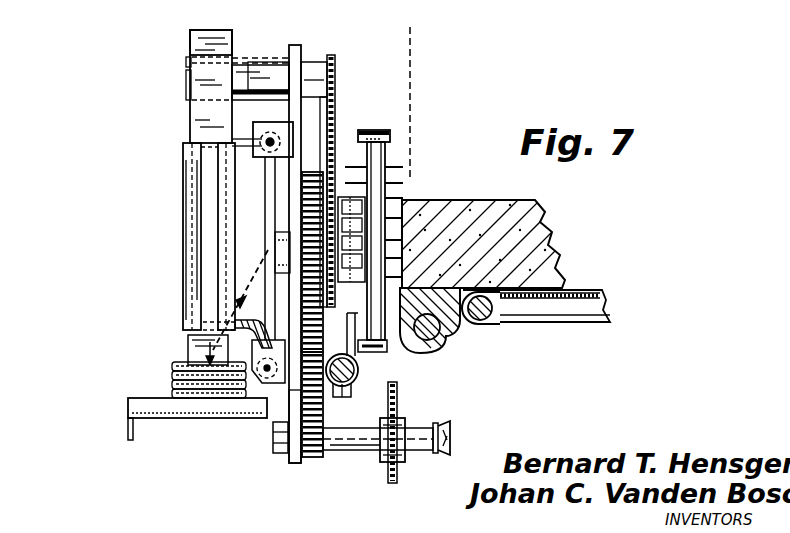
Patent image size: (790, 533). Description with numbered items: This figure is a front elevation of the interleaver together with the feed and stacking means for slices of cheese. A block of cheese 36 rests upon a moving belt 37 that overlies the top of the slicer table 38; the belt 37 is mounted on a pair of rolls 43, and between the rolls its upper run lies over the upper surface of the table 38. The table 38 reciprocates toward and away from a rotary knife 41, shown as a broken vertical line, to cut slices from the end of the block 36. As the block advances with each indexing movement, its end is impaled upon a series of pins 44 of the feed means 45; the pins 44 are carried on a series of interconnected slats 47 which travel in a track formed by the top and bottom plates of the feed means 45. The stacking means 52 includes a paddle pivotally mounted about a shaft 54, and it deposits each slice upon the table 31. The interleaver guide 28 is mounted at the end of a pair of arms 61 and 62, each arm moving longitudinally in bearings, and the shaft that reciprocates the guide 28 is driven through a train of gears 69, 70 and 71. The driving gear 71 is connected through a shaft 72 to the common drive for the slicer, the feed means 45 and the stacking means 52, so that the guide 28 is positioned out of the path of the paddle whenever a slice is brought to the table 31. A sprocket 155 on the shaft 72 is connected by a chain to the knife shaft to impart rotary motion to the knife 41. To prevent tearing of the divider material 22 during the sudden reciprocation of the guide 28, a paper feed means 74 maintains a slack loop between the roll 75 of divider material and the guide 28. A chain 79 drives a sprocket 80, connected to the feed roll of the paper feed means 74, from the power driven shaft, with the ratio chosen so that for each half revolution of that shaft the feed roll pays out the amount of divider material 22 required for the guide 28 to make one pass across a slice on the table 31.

The divider material 22 is at (200, 118).
The guide 28 is at (183, 212).
The table 31 is at (178, 428).
The block of cheese 36 is at (545, 216).
The belt 37 is at (585, 290).
The table of slicer 38 is at (603, 296).
The rotary knife 41 is at (412, 55).
The rolls 43 is at (487, 316).
The pins 44 is at (348, 166).
The feed means 45 is at (382, 124).
The slats 47 is at (385, 157).
The stacking means 52 is at (355, 314).
The shaft 54 is at (352, 384).
The arm 61 is at (263, 140).
The arm 62 is at (268, 369).
The gear 69 is at (305, 183).
The gear 70 is at (300, 393).
The driving gear 71 is at (315, 458).
The shaft 72 is at (421, 432).
The paper feed means 74 is at (183, 85).
The roll 75 is at (190, 33).
The chain 79 is at (335, 123).
The sprocket 80 is at (335, 62).
The sprocket 155 is at (396, 484).